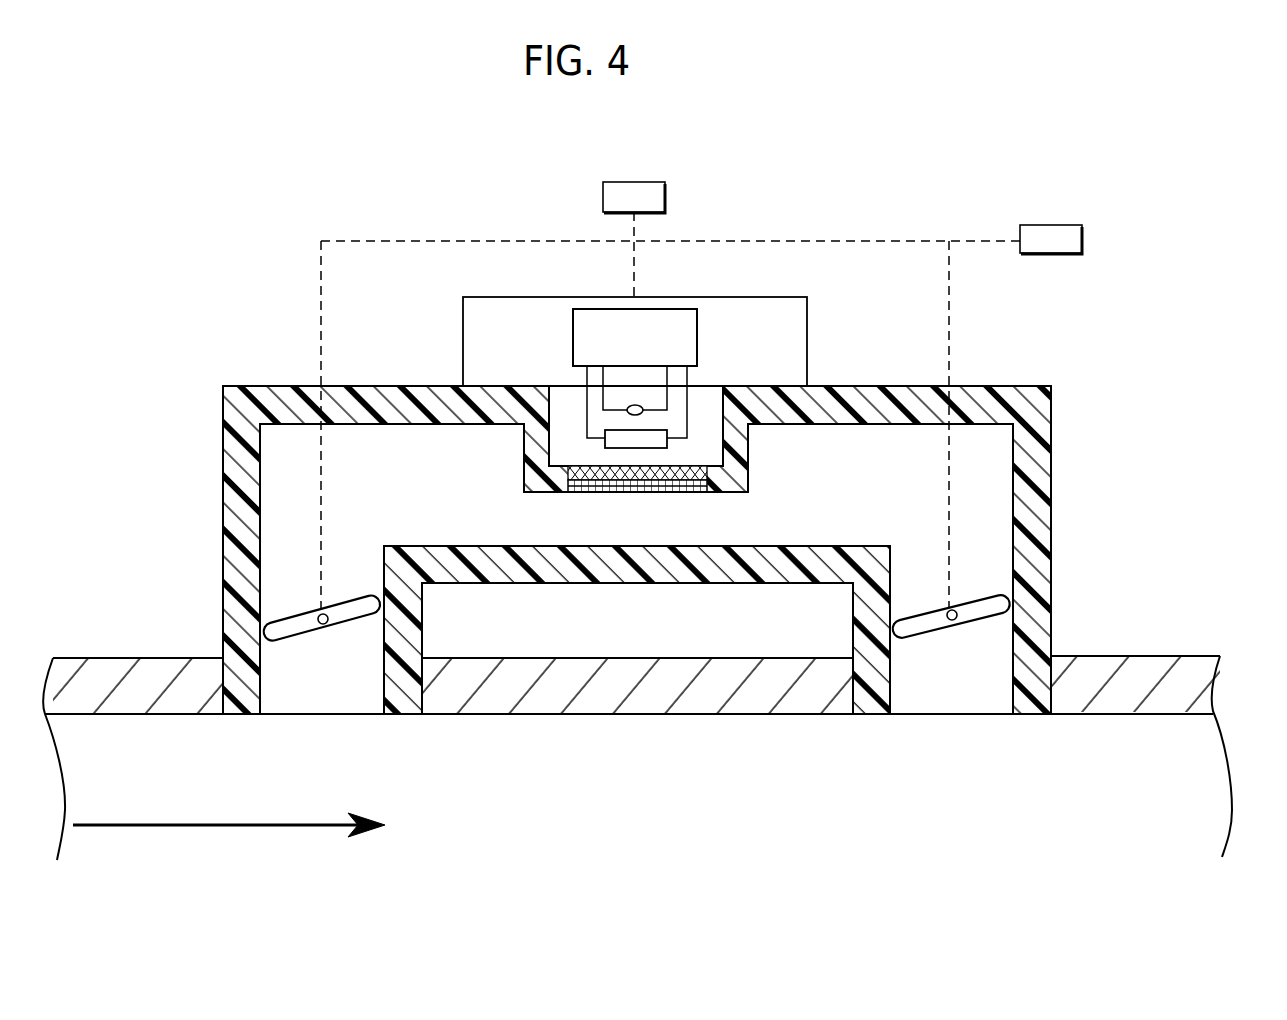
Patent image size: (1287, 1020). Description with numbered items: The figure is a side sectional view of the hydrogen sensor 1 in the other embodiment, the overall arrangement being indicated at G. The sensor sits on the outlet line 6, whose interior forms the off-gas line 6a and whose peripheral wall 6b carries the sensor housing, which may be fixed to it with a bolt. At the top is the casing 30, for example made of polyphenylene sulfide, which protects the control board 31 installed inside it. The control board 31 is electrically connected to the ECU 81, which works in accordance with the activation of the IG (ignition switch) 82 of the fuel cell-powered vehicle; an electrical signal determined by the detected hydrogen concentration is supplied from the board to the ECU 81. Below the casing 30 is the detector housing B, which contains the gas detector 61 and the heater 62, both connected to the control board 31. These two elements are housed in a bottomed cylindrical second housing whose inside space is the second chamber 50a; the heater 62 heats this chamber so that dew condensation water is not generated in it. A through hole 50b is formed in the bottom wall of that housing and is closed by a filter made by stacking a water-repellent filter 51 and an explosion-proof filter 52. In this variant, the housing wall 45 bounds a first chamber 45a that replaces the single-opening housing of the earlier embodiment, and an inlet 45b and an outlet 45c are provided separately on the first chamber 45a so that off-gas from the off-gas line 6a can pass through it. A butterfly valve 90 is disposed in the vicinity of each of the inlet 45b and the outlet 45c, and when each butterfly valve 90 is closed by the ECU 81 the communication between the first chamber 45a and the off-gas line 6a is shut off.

The gas sensor system G is at (775, 158).
The hydrogen sensor 1 is at (668, 475).
The detector housing B is at (1080, 412).
The outlet line 6 is at (1153, 665).
The off-gas line 6a is at (664, 803).
The peripheral wall 6b is at (122, 670).
The casing 30 is at (463, 346).
The control board 31 is at (697, 342).
The housing 45 is at (1053, 508).
The first chamber 45a is at (472, 503).
The inlet 45b is at (337, 697).
The outlet 45c is at (947, 695).
The second chamber 50a is at (565, 392).
The through hole 50b is at (584, 493).
The water-repellent filter 51 is at (686, 493).
The explosion-proof filter 52 is at (631, 493).
The gas detector 61 is at (641, 408).
The heater 62 is at (656, 438).
The ECU 81 is at (666, 196).
The IG (ignition switch) 82 is at (1083, 238).
The butterfly valve 90 is at (284, 633).